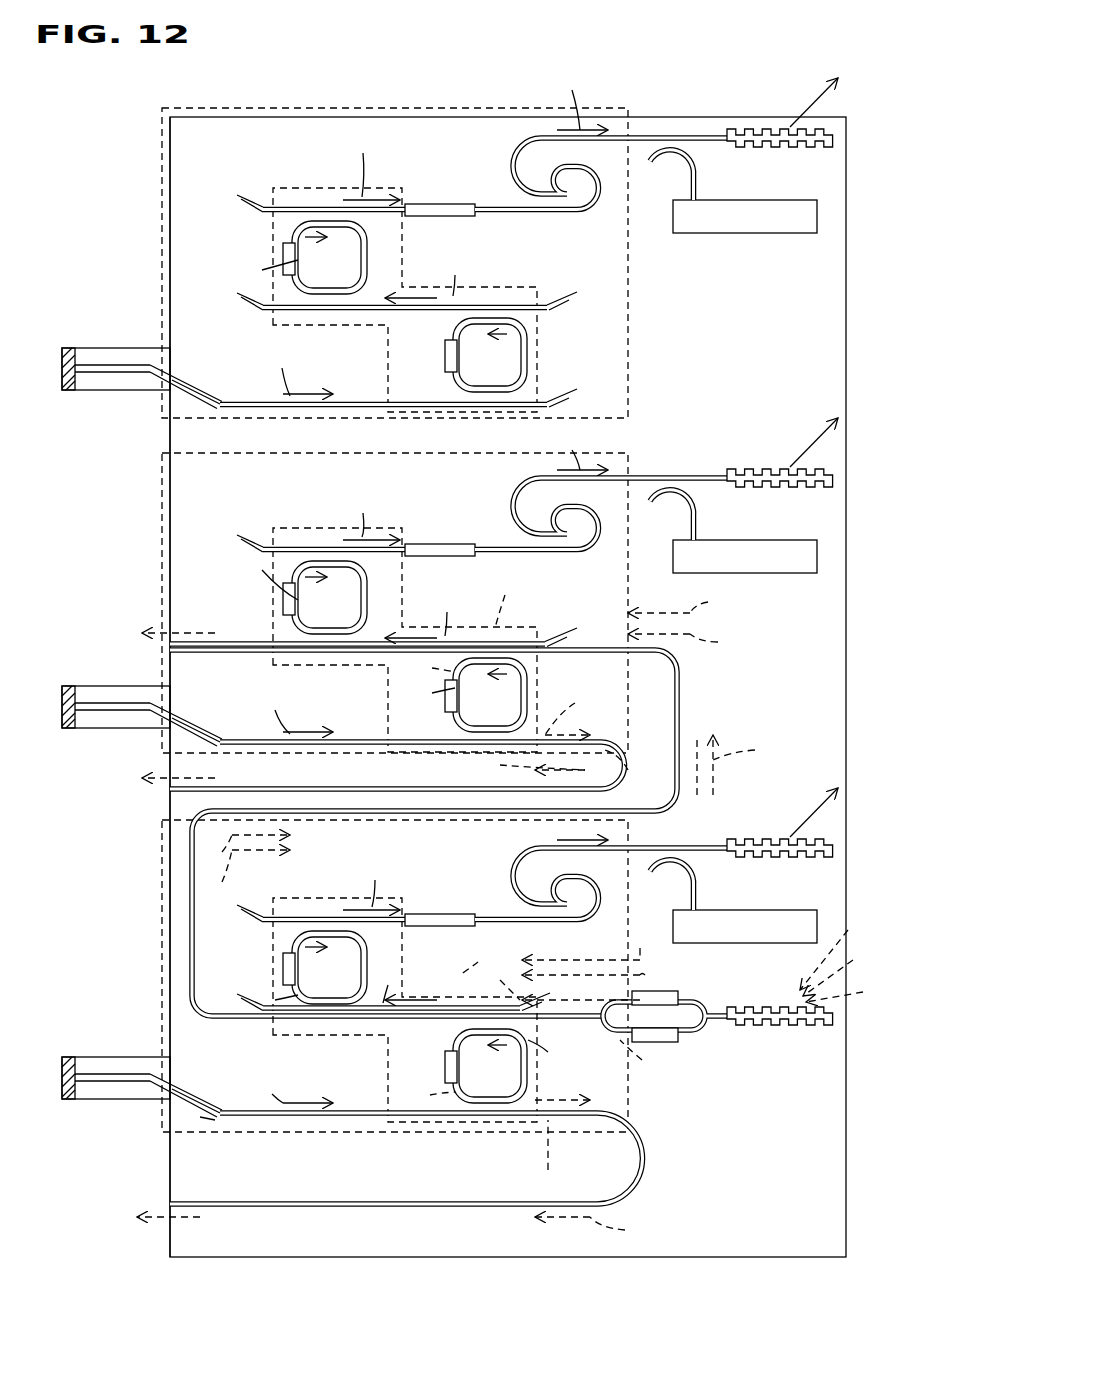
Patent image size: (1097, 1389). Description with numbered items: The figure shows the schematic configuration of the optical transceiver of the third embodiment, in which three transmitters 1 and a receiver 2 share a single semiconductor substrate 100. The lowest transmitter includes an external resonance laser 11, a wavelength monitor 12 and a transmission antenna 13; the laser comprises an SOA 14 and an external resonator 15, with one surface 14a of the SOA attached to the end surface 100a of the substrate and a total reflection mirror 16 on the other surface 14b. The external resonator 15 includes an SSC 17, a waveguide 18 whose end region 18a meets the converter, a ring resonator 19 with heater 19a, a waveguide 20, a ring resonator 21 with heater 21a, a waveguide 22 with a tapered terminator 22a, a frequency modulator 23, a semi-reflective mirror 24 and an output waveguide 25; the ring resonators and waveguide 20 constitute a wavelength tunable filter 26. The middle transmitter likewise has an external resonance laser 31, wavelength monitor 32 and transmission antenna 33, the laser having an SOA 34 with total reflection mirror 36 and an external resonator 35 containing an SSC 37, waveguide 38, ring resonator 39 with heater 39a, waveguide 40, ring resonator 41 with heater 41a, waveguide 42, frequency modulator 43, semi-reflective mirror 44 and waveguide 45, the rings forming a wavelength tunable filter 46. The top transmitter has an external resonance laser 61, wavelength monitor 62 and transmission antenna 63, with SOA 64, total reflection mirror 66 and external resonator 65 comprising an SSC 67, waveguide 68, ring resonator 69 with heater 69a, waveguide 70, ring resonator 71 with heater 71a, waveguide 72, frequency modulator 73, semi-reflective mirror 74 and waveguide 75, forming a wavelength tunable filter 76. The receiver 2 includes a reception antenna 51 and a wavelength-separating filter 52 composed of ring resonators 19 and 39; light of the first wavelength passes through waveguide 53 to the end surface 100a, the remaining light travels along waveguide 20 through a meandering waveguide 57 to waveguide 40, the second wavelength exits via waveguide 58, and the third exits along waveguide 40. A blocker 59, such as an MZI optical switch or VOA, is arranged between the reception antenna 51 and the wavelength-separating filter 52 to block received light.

The transmitter 1 is at (148, 180).
The receiver 2 is at (493, 713).
The external resonance laser 11 is at (160, 938).
The wavelength monitor 12 is at (745, 910).
The transmission antenna 13 is at (765, 838).
The SOA 14 is at (87, 1069).
The one surface 14a is at (135, 1068).
The other surface 14b is at (62, 1068).
The external resonator 15 is at (160, 830).
The total reflection mirror 16 is at (40, 1091).
The SSC 17 is at (196, 1086).
The waveguide 18 is at (365, 1111).
The waveguide end 18a is at (218, 1122).
The ring resonator 19 is at (542, 1066).
The heater 19a is at (447, 1067).
The waveguide 20 is at (340, 1020).
The ring resonator 21 is at (360, 960).
The heater 21a is at (283, 966).
The waveguide 22 is at (328, 917).
The terminator 22a is at (255, 910).
The frequency modulator 23 is at (442, 915).
The semi-reflective mirror 24 is at (580, 925).
The waveguide 25 is at (685, 845).
The wavelength tunable filter 26 is at (400, 895).
The external resonance laser 31 is at (160, 578).
The wavelength monitor 32 is at (745, 540).
The transmission antenna 33 is at (762, 469).
The SOA 34 is at (94, 677).
The external resonator 35 is at (160, 461).
The total reflection mirror 36 is at (65, 708).
The SSC 37 is at (196, 716).
The waveguide 38 is at (365, 740).
The ring resonator 39 is at (520, 690).
The heater 39a is at (447, 700).
The waveguide 40 is at (345, 650).
The ring resonator 41 is at (360, 590).
The heater 41a is at (283, 596).
The waveguide 42 is at (315, 547).
The frequency modulator 43 is at (440, 545).
The semi-reflective mirror 44 is at (583, 555).
The waveguide 45 is at (668, 474).
The wavelength tunable filter 46 is at (282, 525).
The reception antenna 51 is at (775, 1028).
The wavelength-separating filter 52 is at (520, 1072).
The waveguide 53 is at (420, 1215).
The meandering waveguide 57 is at (682, 688).
The waveguide 58 is at (290, 788).
The blocker 59 is at (690, 1035).
The external resonance laser 61 is at (160, 238).
The wavelength monitor 62 is at (745, 200).
The transmission antenna 63 is at (762, 129).
The SOA 64 is at (94, 338).
The external resonator 65 is at (160, 121).
The total reflection mirror 66 is at (65, 370).
The SSC 67 is at (196, 378).
The waveguide 68 is at (365, 402).
The ring resonator 69 is at (525, 350).
The heater 69a is at (447, 352).
The waveguide 70 is at (345, 312).
The ring resonator 71 is at (360, 252).
The heater 71a is at (283, 250).
The waveguide 72 is at (315, 207).
The frequency modulator 73 is at (440, 205).
The semi-reflective mirror 74 is at (583, 215).
The waveguide 75 is at (668, 134).
The wavelength tunable filter 76 is at (282, 185).
The semiconductor substrate 100 is at (455, 713).
The end surface 100a is at (168, 1248).